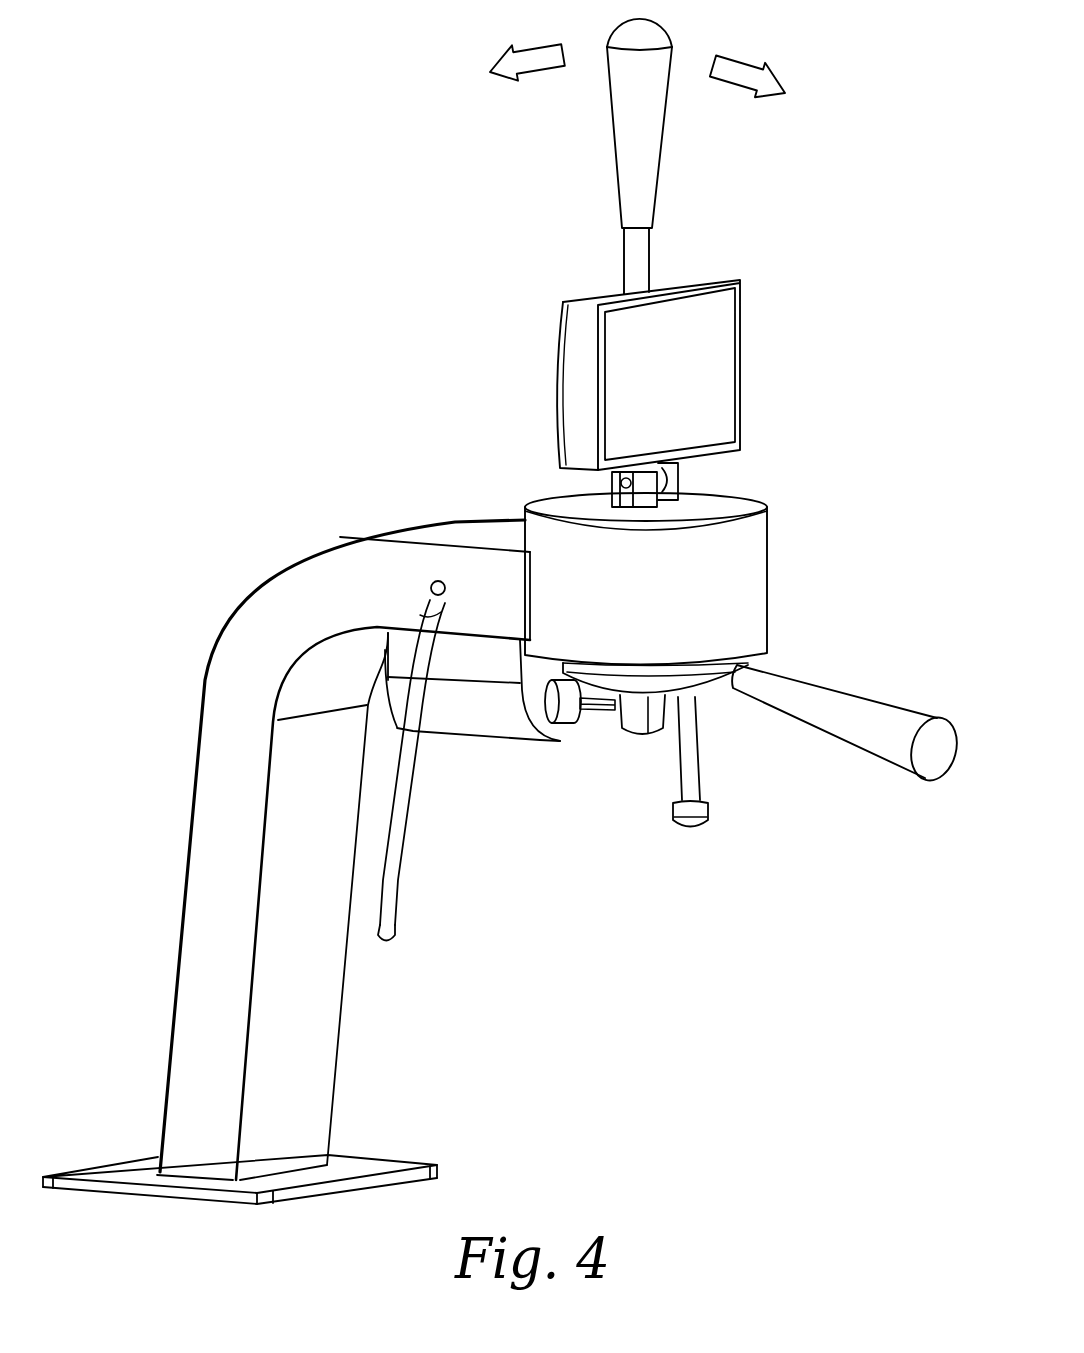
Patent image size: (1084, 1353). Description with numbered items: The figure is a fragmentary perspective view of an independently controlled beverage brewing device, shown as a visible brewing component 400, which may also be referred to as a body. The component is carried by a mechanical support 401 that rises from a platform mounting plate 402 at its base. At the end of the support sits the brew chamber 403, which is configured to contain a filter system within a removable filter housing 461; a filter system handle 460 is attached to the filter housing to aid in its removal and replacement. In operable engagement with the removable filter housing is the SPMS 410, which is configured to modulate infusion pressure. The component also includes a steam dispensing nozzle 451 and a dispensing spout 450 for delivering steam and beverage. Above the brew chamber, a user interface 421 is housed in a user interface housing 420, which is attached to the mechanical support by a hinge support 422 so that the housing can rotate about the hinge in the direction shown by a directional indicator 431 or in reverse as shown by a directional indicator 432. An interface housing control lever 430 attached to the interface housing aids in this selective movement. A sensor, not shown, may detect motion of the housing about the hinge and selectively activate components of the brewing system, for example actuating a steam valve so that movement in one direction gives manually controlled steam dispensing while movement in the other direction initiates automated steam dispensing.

The visible brewing component 400 is at (358, 322).
The mechanical support 401 is at (292, 590).
The platform mounting plate 402 is at (372, 1165).
The brew chamber 403 is at (713, 570).
The SPMS 410 is at (485, 705).
The user interface housing 420 is at (580, 348).
The user interface 421 is at (702, 363).
The hinge support 422 is at (680, 482).
The interface housing control lever 430 is at (638, 180).
The directional indicator 431 is at (733, 78).
The directional indicator 432 is at (533, 65).
The dispensing spout 450 is at (713, 810).
The steam dispensing nozzle 451 is at (393, 942).
The filter system handle 460 is at (793, 693).
The removable filter housing 461 is at (635, 713).